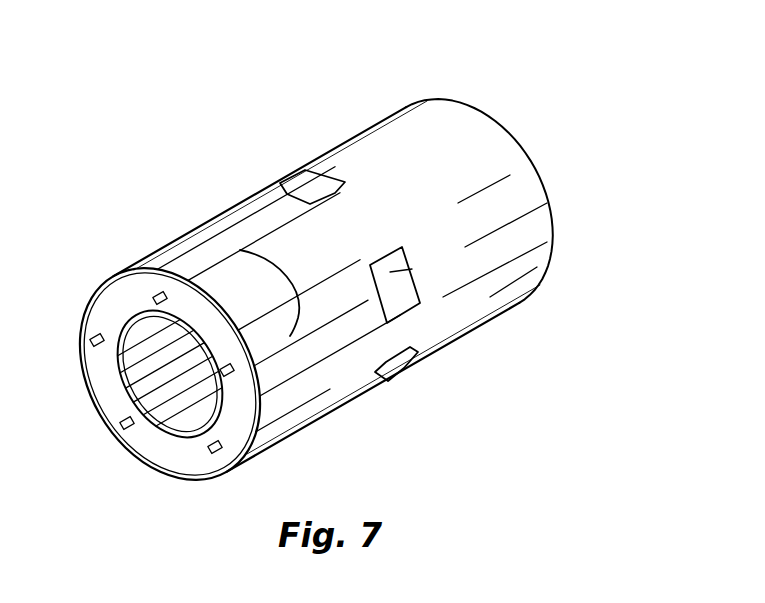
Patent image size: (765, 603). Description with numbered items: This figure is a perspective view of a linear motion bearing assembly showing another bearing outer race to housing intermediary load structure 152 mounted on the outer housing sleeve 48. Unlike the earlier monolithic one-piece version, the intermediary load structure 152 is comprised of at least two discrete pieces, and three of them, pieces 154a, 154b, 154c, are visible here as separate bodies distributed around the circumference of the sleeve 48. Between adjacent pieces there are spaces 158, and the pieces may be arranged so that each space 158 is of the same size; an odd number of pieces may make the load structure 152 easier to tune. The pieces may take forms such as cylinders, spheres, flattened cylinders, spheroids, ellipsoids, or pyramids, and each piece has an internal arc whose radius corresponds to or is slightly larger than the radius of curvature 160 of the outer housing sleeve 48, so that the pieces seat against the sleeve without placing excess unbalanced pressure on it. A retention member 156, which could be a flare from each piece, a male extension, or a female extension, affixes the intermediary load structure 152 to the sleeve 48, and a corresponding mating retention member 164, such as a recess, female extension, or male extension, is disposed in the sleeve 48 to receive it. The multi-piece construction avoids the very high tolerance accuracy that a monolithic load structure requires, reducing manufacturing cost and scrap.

The bearing outer race to housing intermediary load structure 152 is at (180, 125).
The piece 154a is at (320, 176).
The piece 154b is at (412, 269).
The piece 154c is at (397, 370).
The retention member 156 is at (377, 217).
The space 158 is at (460, 203).
The radius of curvature 160 is at (240, 250).
The mating retention member 164 is at (162, 373).
The outer housing sleeve 48 is at (527, 177).